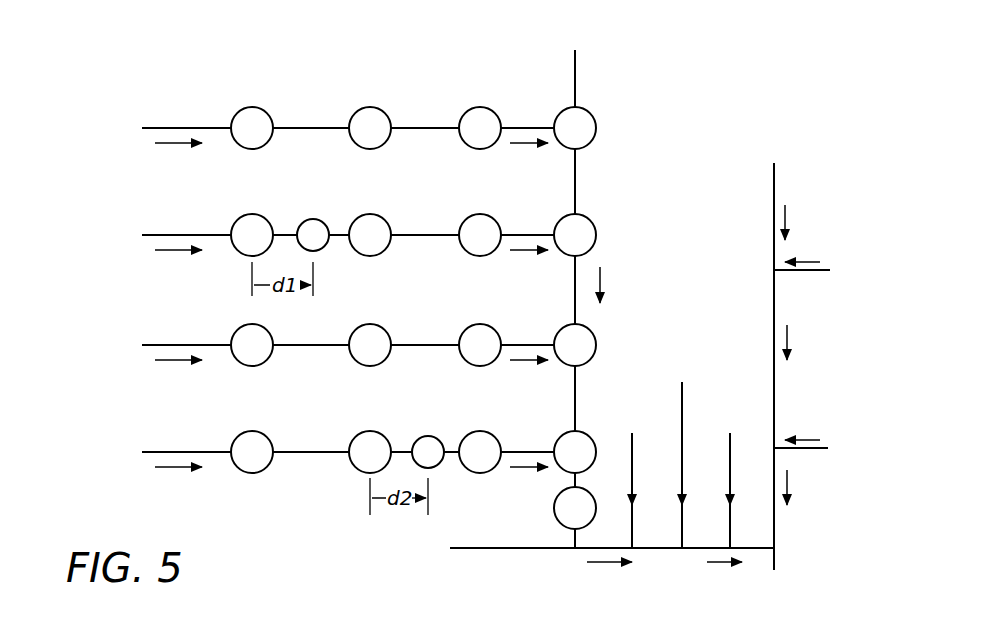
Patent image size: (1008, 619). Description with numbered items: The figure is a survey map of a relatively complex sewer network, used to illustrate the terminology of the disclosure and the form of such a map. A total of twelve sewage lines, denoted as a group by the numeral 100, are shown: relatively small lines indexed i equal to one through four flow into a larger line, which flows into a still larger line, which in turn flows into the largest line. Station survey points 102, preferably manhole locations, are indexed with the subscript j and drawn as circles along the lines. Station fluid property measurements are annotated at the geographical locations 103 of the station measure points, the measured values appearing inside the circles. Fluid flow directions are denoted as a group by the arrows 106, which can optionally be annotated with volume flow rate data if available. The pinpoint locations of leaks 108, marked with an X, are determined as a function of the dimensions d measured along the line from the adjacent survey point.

The sewage lines 100 is at (92, 146).
The station survey points 102 is at (372, 72).
The geographical locations of the station measure points 103 is at (590, 148).
The arrows 106 is at (180, 144).
The pinpoint locations of leaks 108 is at (313, 218).